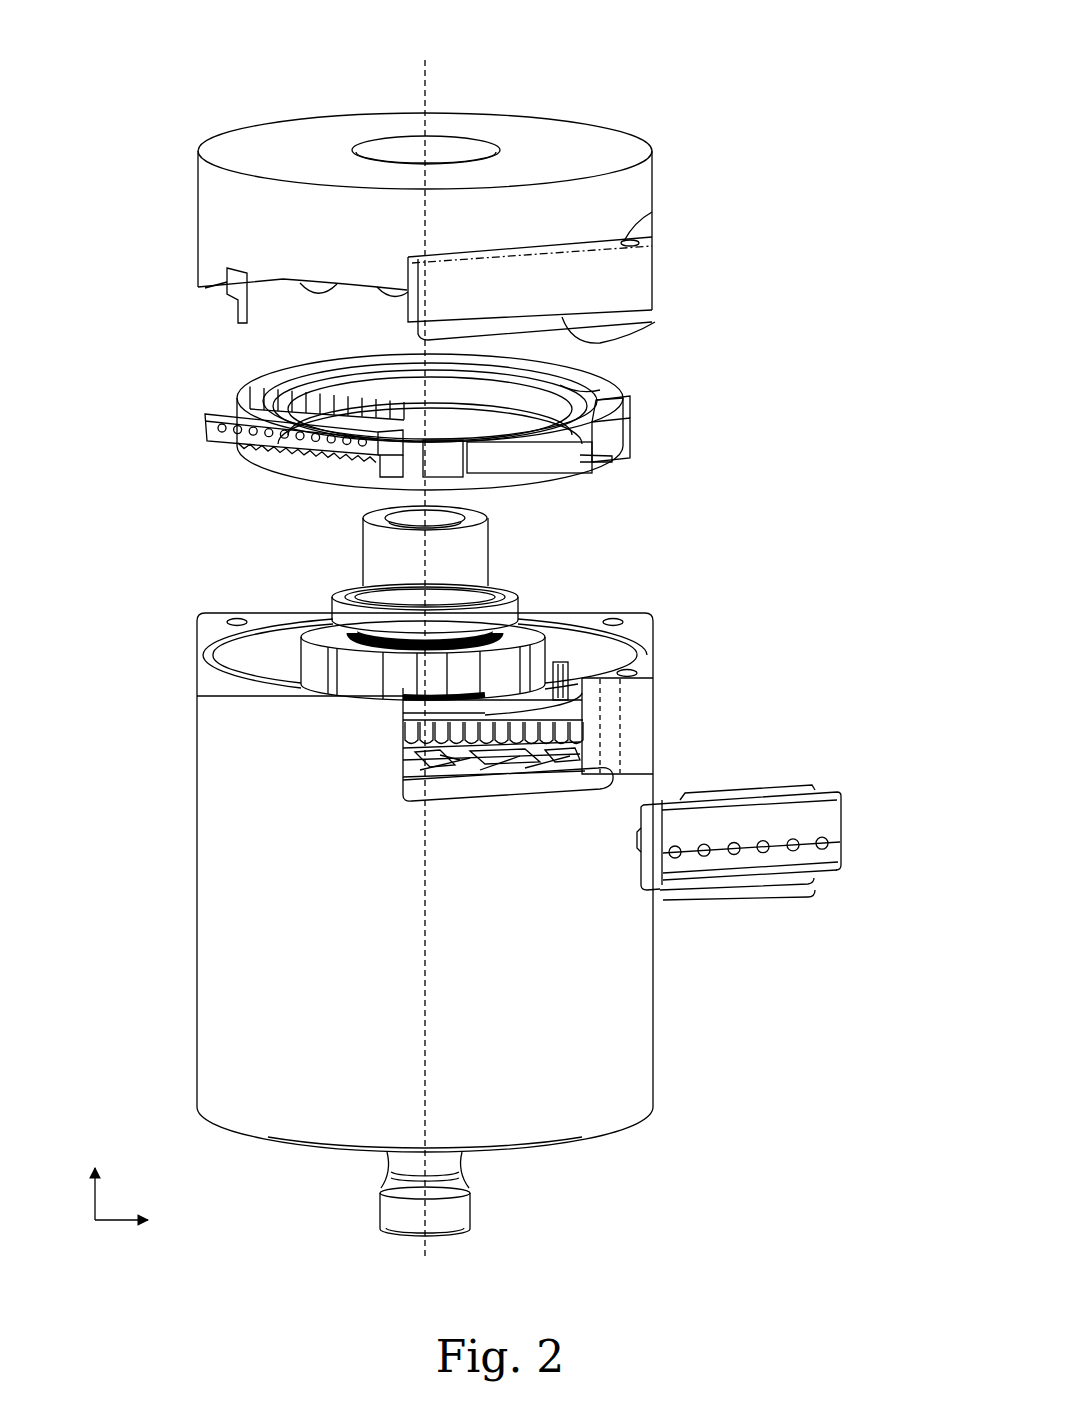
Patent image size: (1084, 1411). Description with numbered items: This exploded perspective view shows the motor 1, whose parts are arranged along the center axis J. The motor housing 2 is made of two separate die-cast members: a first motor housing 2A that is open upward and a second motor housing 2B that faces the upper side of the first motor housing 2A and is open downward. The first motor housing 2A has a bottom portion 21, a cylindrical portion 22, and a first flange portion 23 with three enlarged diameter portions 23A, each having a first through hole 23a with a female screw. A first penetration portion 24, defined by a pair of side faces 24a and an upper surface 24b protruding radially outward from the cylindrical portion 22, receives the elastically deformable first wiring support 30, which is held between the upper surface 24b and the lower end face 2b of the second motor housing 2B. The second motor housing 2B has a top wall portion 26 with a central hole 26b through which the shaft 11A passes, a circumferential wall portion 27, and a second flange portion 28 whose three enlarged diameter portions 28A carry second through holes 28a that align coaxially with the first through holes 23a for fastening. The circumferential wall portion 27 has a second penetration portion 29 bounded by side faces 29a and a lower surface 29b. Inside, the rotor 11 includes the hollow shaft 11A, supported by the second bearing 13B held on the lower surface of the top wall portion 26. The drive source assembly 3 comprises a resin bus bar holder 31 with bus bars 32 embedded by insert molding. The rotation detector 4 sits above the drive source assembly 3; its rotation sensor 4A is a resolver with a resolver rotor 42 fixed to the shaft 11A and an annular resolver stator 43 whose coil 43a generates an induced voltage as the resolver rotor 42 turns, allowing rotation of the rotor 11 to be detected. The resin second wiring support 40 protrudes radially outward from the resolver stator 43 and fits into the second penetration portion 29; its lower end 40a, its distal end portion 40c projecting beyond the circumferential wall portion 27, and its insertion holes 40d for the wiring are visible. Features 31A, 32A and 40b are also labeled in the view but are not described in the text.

The motor 1 is at (501, 629).
The center axis J is at (430, 74).
The motor housing 2 is at (195, 156).
The first motor housing 2A is at (427, 889).
The second motor housing 2B is at (432, 184).
The lower end face 2b is at (602, 333).
The drive source assembly 3 is at (440, 753).
The rotation detector 4 is at (426, 440).
The rotation sensor 4A is at (612, 456).
The rotor 11 is at (356, 552).
The shaft 11A is at (362, 553).
The second bearing 13B is at (356, 622).
The bottom portion 21 is at (523, 1155).
The cylindrical portion 22 is at (215, 952).
The first flange portion 23 is at (640, 652).
The first through hole 23a is at (237, 622).
The enlarged diameter portion 23A is at (633, 612).
The first penetration portion 24 is at (440, 701).
The side face 24a is at (583, 706).
The upper surface 24b is at (620, 777).
The top wall portion 26 is at (560, 150).
The central hole 26b is at (385, 146).
The circumferential wall portion 27 is at (220, 219).
The second flange portion 28 is at (645, 277).
The second through hole 28a is at (640, 237).
The enlarged diameter portion 28A is at (650, 237).
The second penetration portion 29 is at (232, 292).
The side face 29a is at (375, 287).
The lower surface 29b is at (300, 283).
The first wiring support 30 is at (812, 825).
The bus bar holder 31 is at (595, 612).
The terminal end 31A is at (556, 700).
The bus bar 32 is at (586, 836).
The circuit board edge 32A is at (480, 747).
The second wiring support 40 is at (249, 440).
The lower end 40a is at (395, 462).
The connector pins 40b is at (246, 400).
The distal end portion 40c is at (240, 462).
The insertion hole 40d is at (212, 440).
The resolver rotor 42 is at (528, 630).
The resolver stator 43 is at (618, 432).
The coil 43a is at (580, 385).